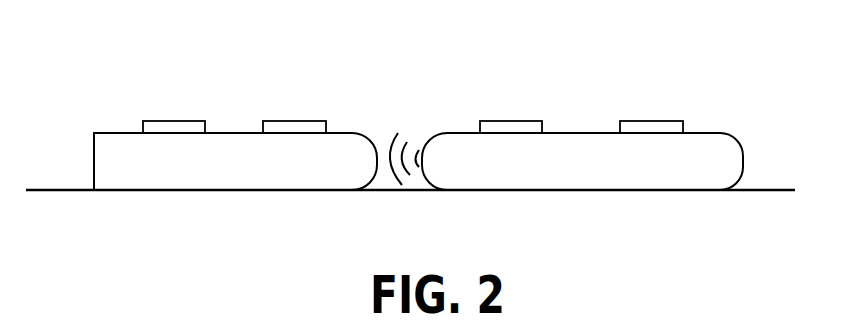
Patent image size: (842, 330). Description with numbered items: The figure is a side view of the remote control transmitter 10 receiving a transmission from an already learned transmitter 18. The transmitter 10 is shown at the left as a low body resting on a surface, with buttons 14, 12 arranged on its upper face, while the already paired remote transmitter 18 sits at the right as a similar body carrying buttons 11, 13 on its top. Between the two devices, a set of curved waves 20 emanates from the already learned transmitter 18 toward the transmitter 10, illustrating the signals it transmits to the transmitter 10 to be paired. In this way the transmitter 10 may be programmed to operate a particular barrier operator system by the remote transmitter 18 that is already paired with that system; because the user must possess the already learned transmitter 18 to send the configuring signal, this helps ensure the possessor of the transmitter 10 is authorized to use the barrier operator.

The transmitter 10 is at (108, 140).
The button 11 is at (510, 118).
The button 12 is at (290, 120).
The button 13 is at (655, 118).
The button 14 is at (172, 120).
The remote transmitter 18 is at (452, 132).
The waves 20 is at (406, 118).